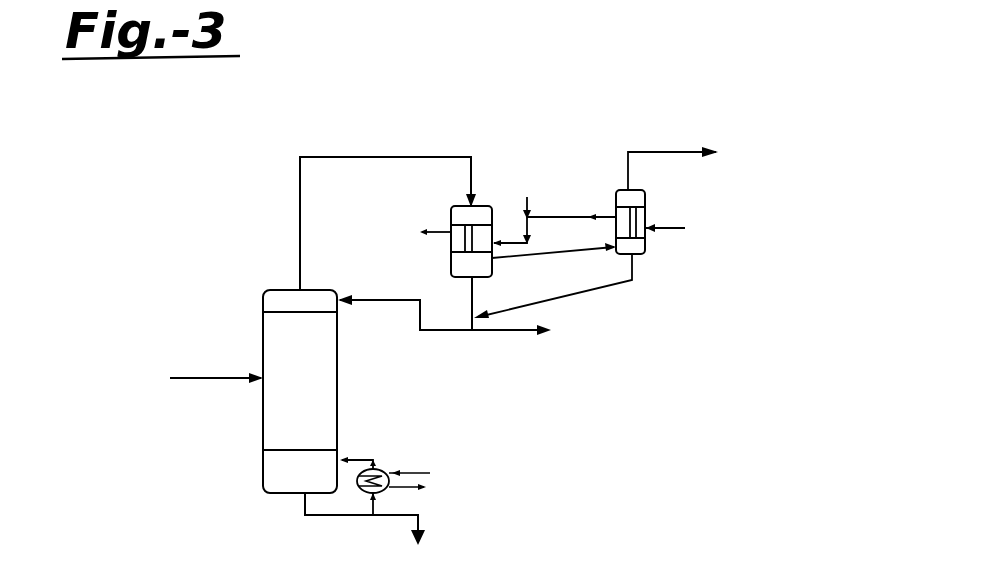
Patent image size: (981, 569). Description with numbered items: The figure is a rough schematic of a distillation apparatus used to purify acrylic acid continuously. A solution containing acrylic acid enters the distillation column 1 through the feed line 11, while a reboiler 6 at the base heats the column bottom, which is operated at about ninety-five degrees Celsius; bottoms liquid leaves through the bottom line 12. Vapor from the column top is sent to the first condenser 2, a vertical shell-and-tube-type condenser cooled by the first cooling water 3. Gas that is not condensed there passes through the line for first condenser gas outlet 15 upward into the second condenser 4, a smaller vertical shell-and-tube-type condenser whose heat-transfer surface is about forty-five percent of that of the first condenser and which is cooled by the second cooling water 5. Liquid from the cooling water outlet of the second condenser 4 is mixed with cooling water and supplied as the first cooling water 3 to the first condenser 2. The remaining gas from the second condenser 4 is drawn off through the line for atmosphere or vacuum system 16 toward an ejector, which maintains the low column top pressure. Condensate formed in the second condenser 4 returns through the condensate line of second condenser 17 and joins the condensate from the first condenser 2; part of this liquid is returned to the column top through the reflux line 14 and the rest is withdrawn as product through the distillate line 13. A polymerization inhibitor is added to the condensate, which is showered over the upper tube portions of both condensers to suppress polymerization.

The distillation column 1 is at (264, 412).
The first condenser 2 is at (493, 210).
The first cooling water 3 is at (434, 232).
The second condenser 4 is at (616, 203).
The second cooling water 5 is at (672, 228).
The reboiler 6 is at (378, 470).
The feed line 11 is at (203, 378).
The bottom line 12 is at (410, 510).
The distillate line 13 is at (520, 330).
The reflux line 14 is at (402, 300).
The line for first condenser gas outlet 15 is at (560, 252).
The line for atmosphere or vacuum system 16 is at (690, 152).
The condensate line of second condenser 17 is at (600, 289).